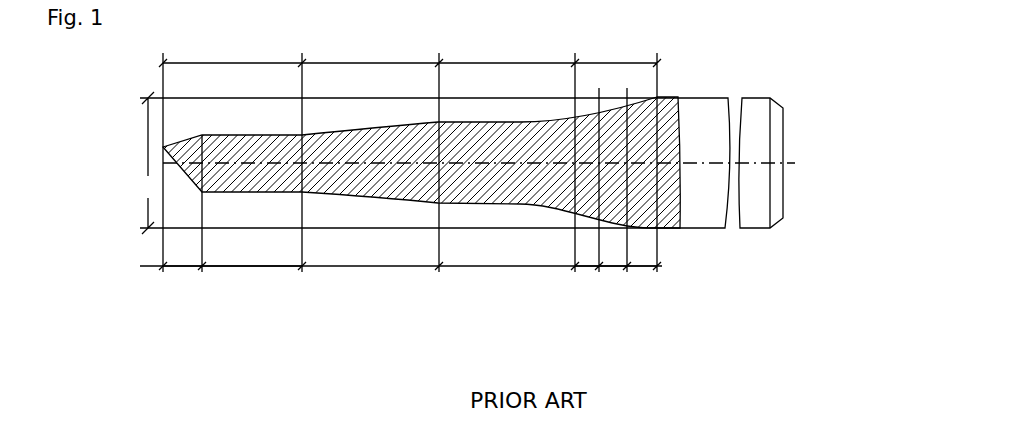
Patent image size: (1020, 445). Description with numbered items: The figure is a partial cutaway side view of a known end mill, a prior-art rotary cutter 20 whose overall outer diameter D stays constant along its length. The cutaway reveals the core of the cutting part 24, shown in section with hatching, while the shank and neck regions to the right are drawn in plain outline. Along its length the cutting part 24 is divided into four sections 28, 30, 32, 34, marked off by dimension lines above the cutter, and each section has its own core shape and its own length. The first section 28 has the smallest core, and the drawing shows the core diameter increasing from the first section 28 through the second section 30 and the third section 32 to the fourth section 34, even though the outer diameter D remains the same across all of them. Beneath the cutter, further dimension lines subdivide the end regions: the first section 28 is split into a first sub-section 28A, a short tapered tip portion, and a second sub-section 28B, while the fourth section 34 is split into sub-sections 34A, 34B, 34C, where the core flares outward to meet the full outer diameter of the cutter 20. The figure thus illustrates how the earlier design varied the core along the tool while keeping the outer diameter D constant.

The cutting tool (prior art) 20 is at (421, 147).
The cutting part 24 is at (355, 222).
The first section 28 is at (246, 74).
The first sub-section of first section 28A is at (186, 272).
The second sub-section of first section 28B is at (268, 272).
The second section 30 is at (383, 74).
The third section 32 is at (520, 74).
The fourth section 34 is at (629, 74).
The first sub-section of fourth section 34A is at (590, 272).
The second sub-section of fourth section 34B is at (613, 272).
The third sub-section of fourth section 34C is at (640, 272).